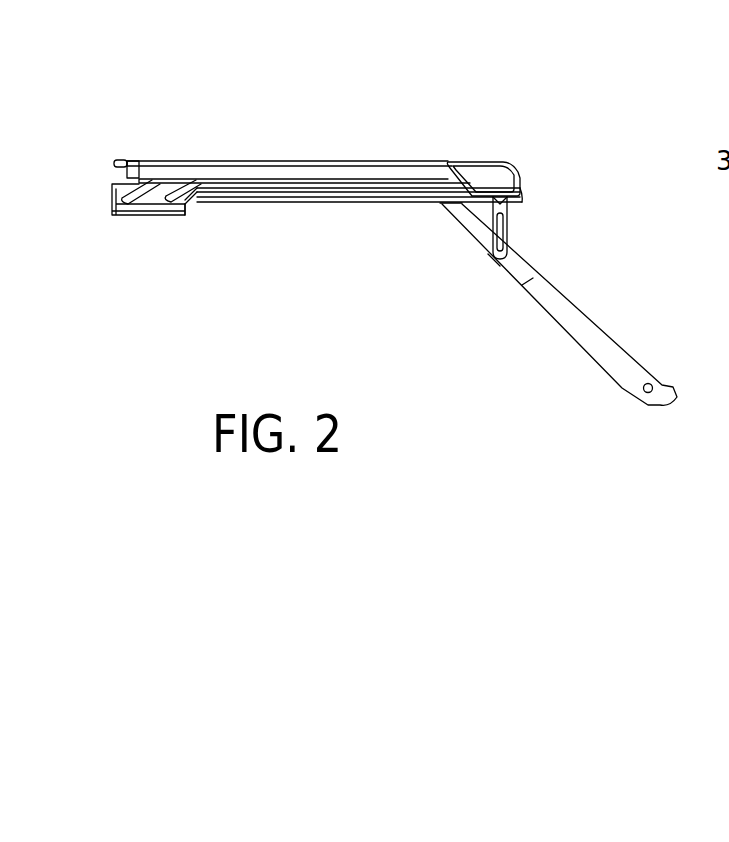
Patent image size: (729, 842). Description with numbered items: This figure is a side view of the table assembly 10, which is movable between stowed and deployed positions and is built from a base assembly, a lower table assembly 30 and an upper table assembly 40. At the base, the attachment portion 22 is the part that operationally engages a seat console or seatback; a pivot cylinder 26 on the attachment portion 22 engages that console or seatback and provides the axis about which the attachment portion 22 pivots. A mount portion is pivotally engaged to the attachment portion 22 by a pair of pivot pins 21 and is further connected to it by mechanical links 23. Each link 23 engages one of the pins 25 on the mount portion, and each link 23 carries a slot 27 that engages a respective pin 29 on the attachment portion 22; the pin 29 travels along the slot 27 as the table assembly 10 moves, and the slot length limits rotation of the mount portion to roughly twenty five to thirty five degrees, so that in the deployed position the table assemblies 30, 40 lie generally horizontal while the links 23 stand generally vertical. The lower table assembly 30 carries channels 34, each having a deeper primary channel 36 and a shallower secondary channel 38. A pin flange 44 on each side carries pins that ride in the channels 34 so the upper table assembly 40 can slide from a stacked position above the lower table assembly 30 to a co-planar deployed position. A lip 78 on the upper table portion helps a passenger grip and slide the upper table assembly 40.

The table assembly 10 is at (481, 99).
The pivot pins 21 is at (447, 199).
The attachment portion 22 is at (582, 325).
The mechanical links 23 is at (509, 212).
The pins 25 is at (522, 196).
The pivot cylinder 26 is at (653, 380).
The slot 27 is at (509, 238).
The pin 29 is at (493, 265).
The lower table assembly 30 is at (112, 199).
The channels 34 is at (323, 186).
The primary channel 36 is at (239, 186).
The secondary channel 38 is at (130, 212).
The upper table assembly 40 is at (236, 159).
The pin flange 44 is at (497, 162).
The lip 78 is at (121, 159).